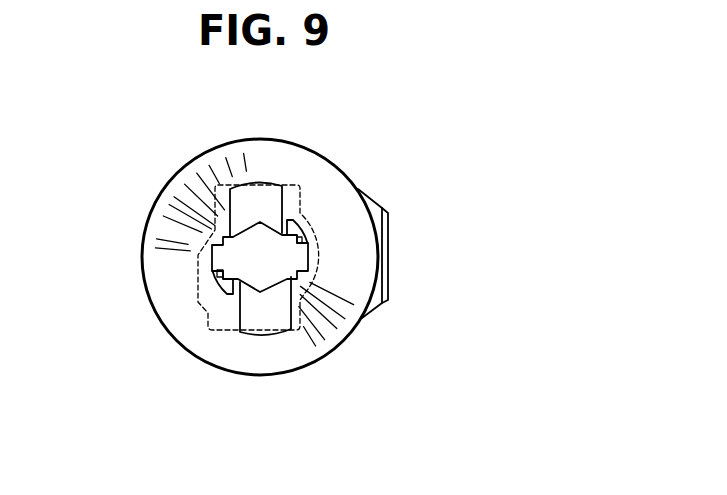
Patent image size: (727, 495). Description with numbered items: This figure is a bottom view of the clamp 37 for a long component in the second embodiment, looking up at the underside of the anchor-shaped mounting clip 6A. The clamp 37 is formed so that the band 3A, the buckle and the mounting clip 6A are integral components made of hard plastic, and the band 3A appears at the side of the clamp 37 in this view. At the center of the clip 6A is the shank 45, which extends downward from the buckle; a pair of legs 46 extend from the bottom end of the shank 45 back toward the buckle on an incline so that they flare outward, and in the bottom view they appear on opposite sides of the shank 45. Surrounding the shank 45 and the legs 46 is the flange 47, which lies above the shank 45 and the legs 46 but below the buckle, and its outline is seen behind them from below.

The clamp 37 is at (294, 256).
The band 3A is at (390, 285).
The mounting clip 6A is at (147, 323).
The shank 45 is at (235, 256).
The legs 46 is at (262, 200).
The flange 47 is at (322, 190).